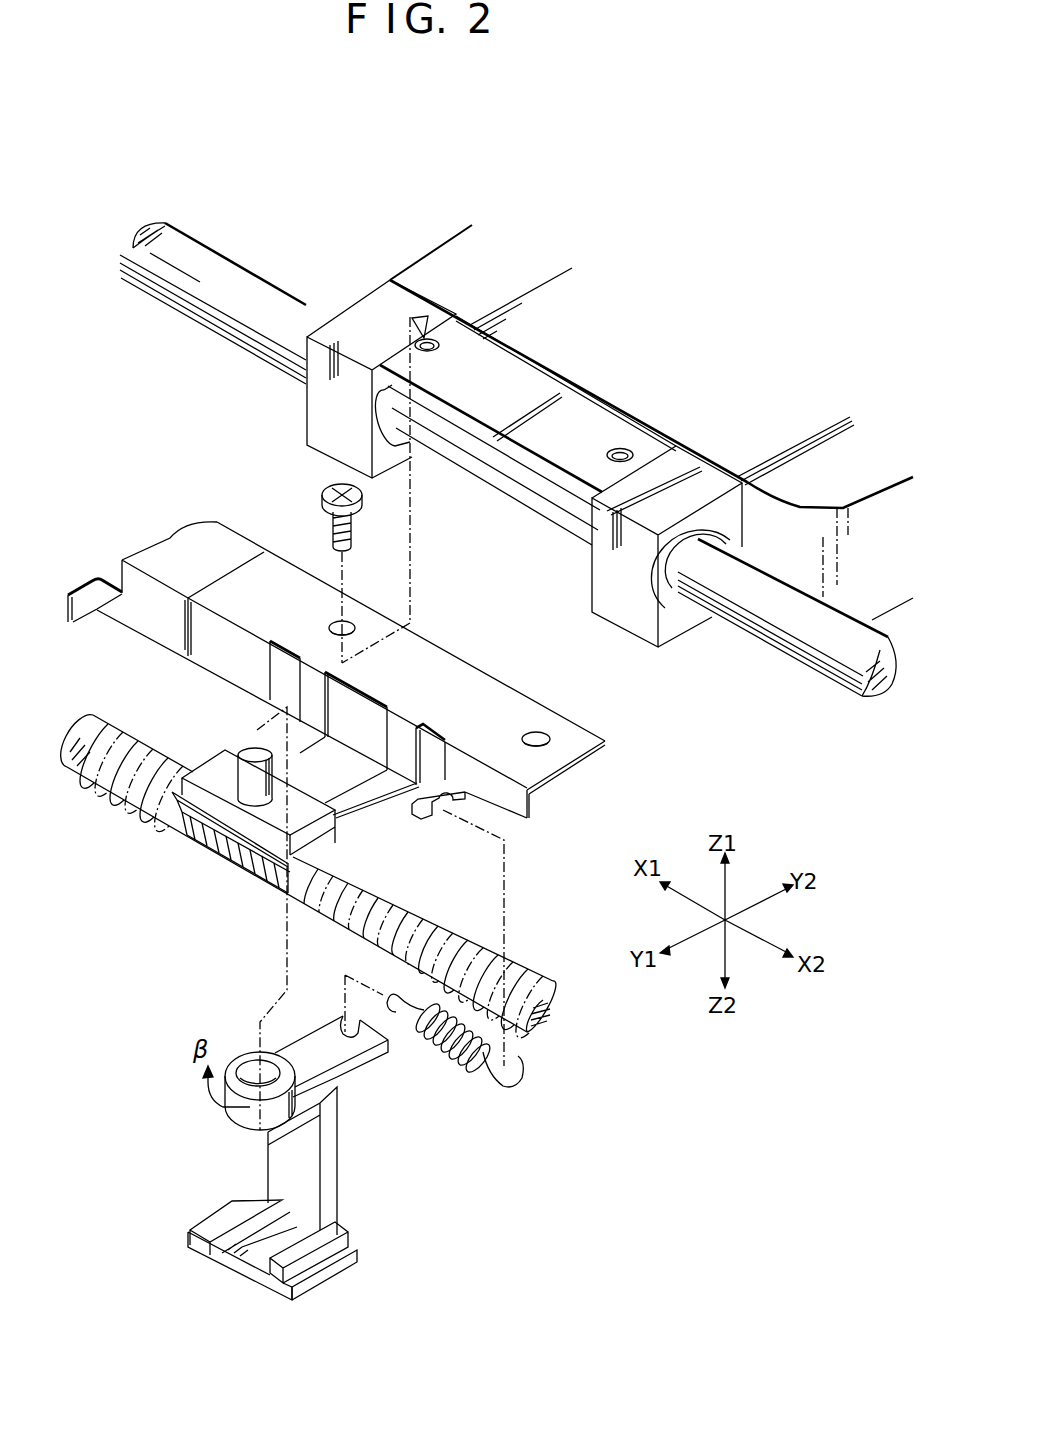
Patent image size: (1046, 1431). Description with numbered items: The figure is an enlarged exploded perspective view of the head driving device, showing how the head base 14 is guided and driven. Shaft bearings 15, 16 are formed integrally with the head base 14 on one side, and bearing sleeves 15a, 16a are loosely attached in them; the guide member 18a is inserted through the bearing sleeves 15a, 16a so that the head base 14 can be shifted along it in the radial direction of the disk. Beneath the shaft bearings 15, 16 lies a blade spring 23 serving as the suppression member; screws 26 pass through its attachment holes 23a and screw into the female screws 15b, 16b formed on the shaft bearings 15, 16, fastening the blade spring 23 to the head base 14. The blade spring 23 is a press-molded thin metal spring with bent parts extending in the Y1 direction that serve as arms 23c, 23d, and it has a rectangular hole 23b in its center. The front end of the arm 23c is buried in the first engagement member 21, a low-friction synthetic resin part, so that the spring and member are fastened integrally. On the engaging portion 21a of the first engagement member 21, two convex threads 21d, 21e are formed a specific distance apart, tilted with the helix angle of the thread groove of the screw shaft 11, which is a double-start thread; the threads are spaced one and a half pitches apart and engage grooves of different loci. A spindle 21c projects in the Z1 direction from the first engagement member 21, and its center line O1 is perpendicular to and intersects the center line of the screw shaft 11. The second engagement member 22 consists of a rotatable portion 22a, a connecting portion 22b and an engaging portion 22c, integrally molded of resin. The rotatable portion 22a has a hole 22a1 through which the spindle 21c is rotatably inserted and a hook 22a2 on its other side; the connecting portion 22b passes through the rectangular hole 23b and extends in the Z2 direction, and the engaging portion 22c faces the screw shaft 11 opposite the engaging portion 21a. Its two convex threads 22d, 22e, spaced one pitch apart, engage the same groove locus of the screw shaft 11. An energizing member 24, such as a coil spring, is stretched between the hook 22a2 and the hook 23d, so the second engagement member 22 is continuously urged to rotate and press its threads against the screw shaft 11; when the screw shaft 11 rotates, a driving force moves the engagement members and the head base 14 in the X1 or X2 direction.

The screw shaft 11 is at (507, 965).
The head base 14 is at (458, 252).
The shaft bearing 15 is at (603, 557).
The bearing sleeve 15a is at (666, 600).
The female screw 15b is at (628, 450).
The shaft bearing 16 is at (320, 427).
The bearing sleeve 16a is at (377, 417).
The female screw 16b is at (425, 338).
The guide member 18a is at (793, 620).
The first engagement member 21 is at (203, 773).
The engaging portion 21a is at (190, 817).
The spindle 21c is at (218, 770).
The convex thread 21d is at (290, 887).
The convex thread 21e is at (223, 842).
The center line of the spindle O1 is at (253, 757).
The second engagement member 22 is at (306, 1145).
The rotatable portion 22a is at (353, 1075).
The hole 22a1 is at (240, 1057).
The hook 22a2 is at (335, 1024).
The connecting portion 22b is at (330, 1177).
The engaging portion 22c is at (340, 1267).
The convex thread 22d is at (307, 1258).
The convex thread 22e is at (222, 1232).
The blade spring 23 is at (167, 552).
The attachment hole 23a is at (333, 620).
The rectangular hole 23b is at (363, 710).
The arm 23c is at (307, 725).
The hook 23d is at (417, 807).
The energizing member 24 is at (470, 1080).
The screw 26 is at (310, 503).